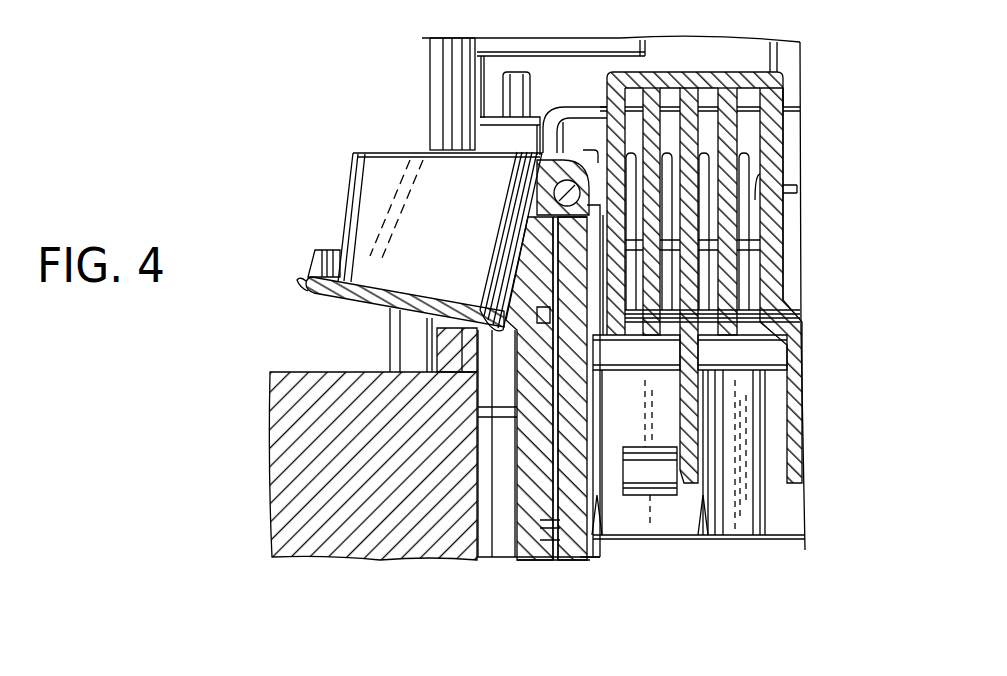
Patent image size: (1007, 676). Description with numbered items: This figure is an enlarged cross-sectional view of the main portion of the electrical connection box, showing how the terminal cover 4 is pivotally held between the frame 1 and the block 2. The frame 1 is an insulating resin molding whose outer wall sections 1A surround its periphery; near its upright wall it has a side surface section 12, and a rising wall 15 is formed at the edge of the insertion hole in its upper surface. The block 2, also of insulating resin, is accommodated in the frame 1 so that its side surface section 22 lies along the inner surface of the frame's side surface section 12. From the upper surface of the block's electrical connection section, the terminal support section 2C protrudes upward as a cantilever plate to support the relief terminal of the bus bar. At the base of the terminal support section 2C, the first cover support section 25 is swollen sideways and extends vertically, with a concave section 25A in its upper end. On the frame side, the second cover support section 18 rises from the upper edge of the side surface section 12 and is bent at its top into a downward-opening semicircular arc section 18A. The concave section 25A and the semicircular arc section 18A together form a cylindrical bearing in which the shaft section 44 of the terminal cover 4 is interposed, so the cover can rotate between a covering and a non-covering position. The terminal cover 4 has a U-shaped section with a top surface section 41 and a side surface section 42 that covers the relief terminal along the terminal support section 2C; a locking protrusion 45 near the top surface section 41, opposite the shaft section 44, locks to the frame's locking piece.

The frame 1 is at (431, 57).
The outer wall section 1A is at (290, 388).
The block 2 is at (807, 403).
The terminal support section 2C is at (728, 72).
The terminal cover 4 is at (387, 211).
The side surface section 12 is at (515, 490).
The rising wall 15 is at (757, 174).
The second cover support section 18 is at (530, 178).
The semicircular arc section 18A is at (556, 106).
The side surface section 22 is at (553, 503).
The first cover support section 25 is at (563, 282).
The concave section 25A is at (547, 200).
The top surface section 41 is at (345, 301).
The side surface section 42 is at (397, 165).
The shaft section 44 is at (556, 193).
The locking protrusion 45 is at (300, 276).